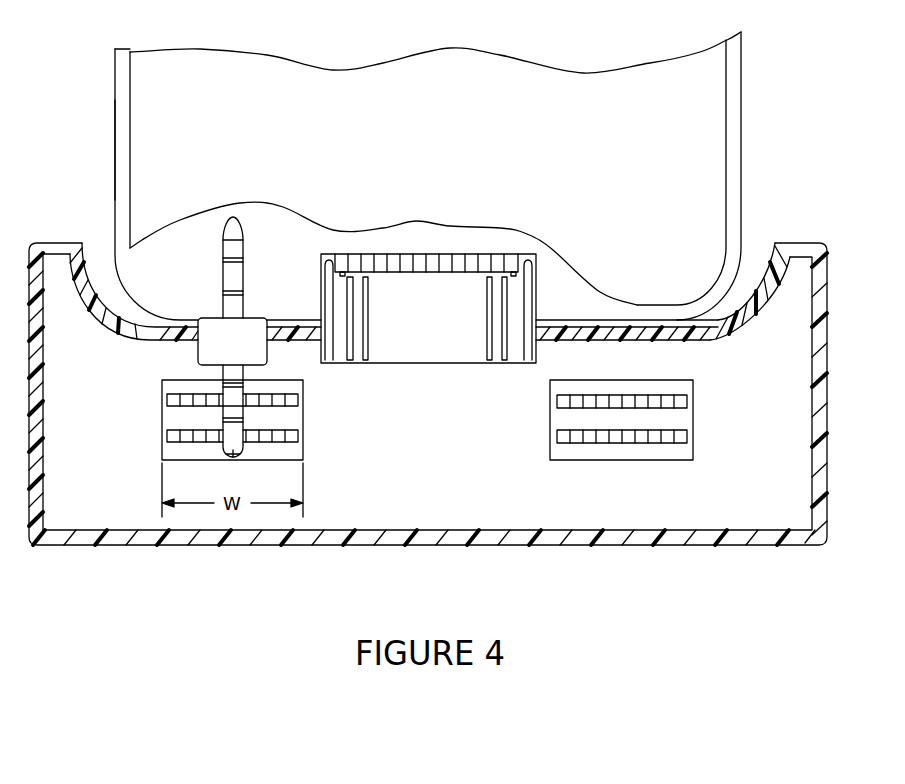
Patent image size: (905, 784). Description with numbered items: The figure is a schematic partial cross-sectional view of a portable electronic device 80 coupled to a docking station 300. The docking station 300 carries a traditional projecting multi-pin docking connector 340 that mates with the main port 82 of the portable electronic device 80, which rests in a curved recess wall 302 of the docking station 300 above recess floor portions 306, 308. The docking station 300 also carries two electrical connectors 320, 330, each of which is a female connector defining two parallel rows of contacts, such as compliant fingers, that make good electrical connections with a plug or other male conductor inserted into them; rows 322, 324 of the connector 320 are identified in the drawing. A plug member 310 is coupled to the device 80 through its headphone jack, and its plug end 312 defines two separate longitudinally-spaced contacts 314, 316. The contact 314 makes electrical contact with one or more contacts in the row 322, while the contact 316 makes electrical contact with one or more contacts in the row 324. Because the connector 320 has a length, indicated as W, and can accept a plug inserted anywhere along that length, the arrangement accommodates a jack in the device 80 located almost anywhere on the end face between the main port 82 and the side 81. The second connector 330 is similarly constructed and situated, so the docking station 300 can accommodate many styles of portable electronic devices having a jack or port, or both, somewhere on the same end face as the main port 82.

The portable electronic device 80 is at (680, 142).
The side 81 is at (115, 115).
The main port 82 is at (427, 254).
The docking station 300 is at (628, 545).
The curved recess wall 302 is at (693, 338).
The recess floor portion 306 is at (275, 333).
The recess floor portion 308 is at (607, 338).
The plug member 310 is at (172, 358).
The plug end 312 is at (255, 367).
The contact 314 is at (233, 455).
The contact 316 is at (230, 410).
The electrical connector 320 is at (303, 418).
The row 322 is at (162, 437).
The row 324 is at (297, 402).
The electrical connector 330 is at (693, 418).
The multi-pin docking connector 340 is at (423, 362).